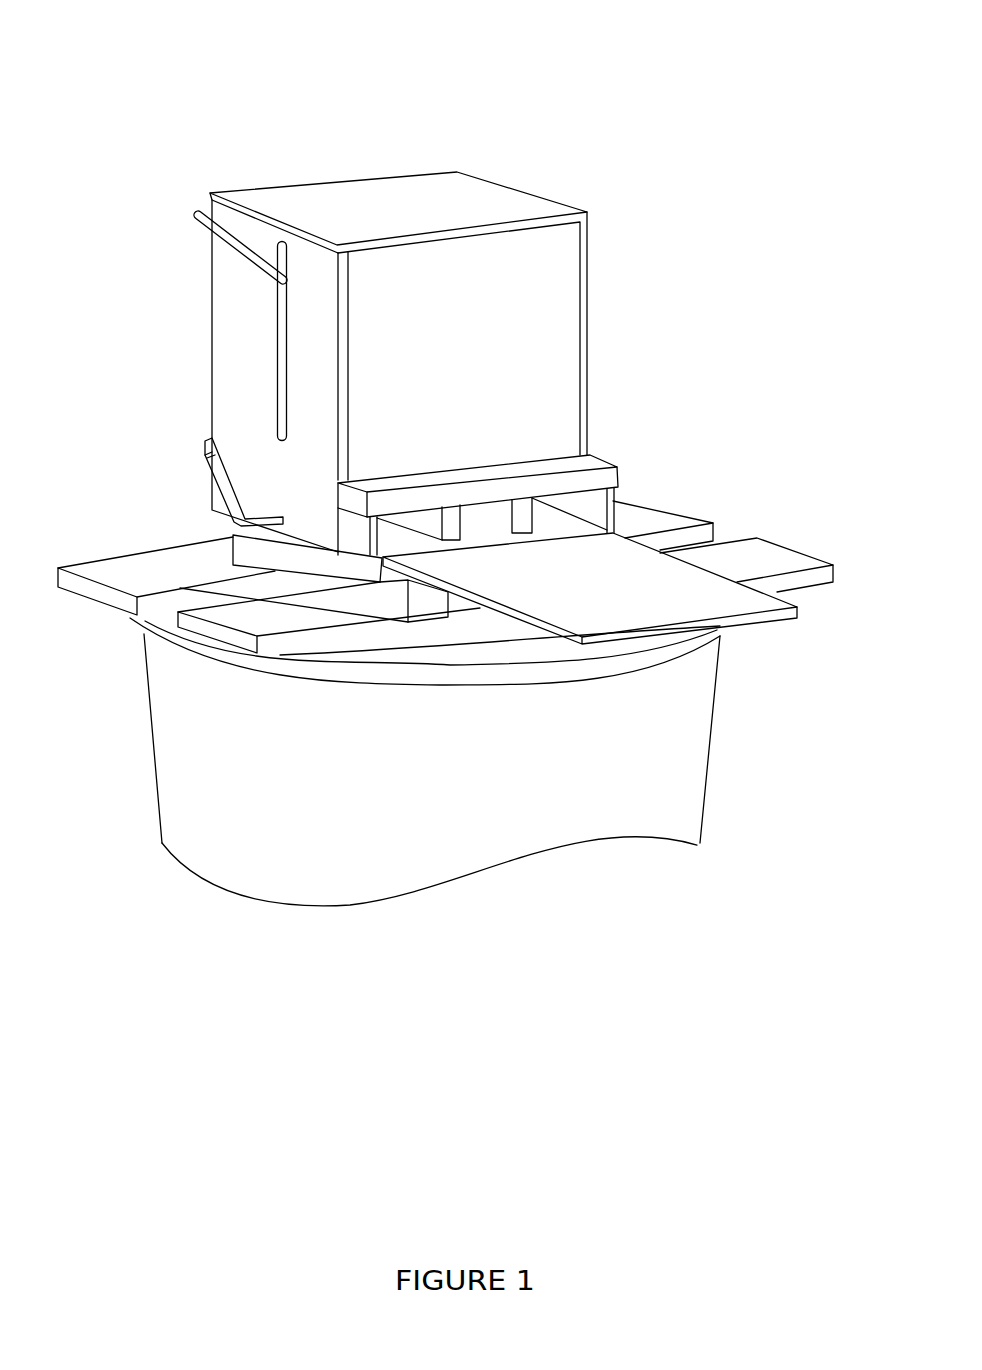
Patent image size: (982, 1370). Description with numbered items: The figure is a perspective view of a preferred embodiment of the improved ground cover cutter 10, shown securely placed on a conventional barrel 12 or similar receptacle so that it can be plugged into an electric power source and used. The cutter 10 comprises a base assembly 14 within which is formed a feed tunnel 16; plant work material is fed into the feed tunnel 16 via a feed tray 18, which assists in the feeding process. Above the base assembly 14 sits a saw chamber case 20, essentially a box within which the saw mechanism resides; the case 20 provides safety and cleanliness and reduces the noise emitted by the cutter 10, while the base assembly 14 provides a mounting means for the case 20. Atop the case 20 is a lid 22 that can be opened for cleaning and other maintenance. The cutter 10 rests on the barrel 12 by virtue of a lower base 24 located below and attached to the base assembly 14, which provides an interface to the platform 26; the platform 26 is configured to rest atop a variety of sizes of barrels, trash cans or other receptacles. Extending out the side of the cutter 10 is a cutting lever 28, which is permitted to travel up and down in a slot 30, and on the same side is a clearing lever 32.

The ground cover cutter 10 is at (280, 108).
The barrel 12 is at (250, 812).
The base assembly 14 is at (613, 513).
The feed tunnel 16 is at (478, 530).
The feed tray 18 is at (733, 600).
The saw chamber case 20 is at (540, 310).
The lid 22 is at (455, 195).
The lower base 24 is at (258, 557).
The platform 26 is at (118, 578).
The cutting lever 28 is at (199, 220).
The slot 30 is at (278, 353).
The clearing lever 32 is at (213, 478).